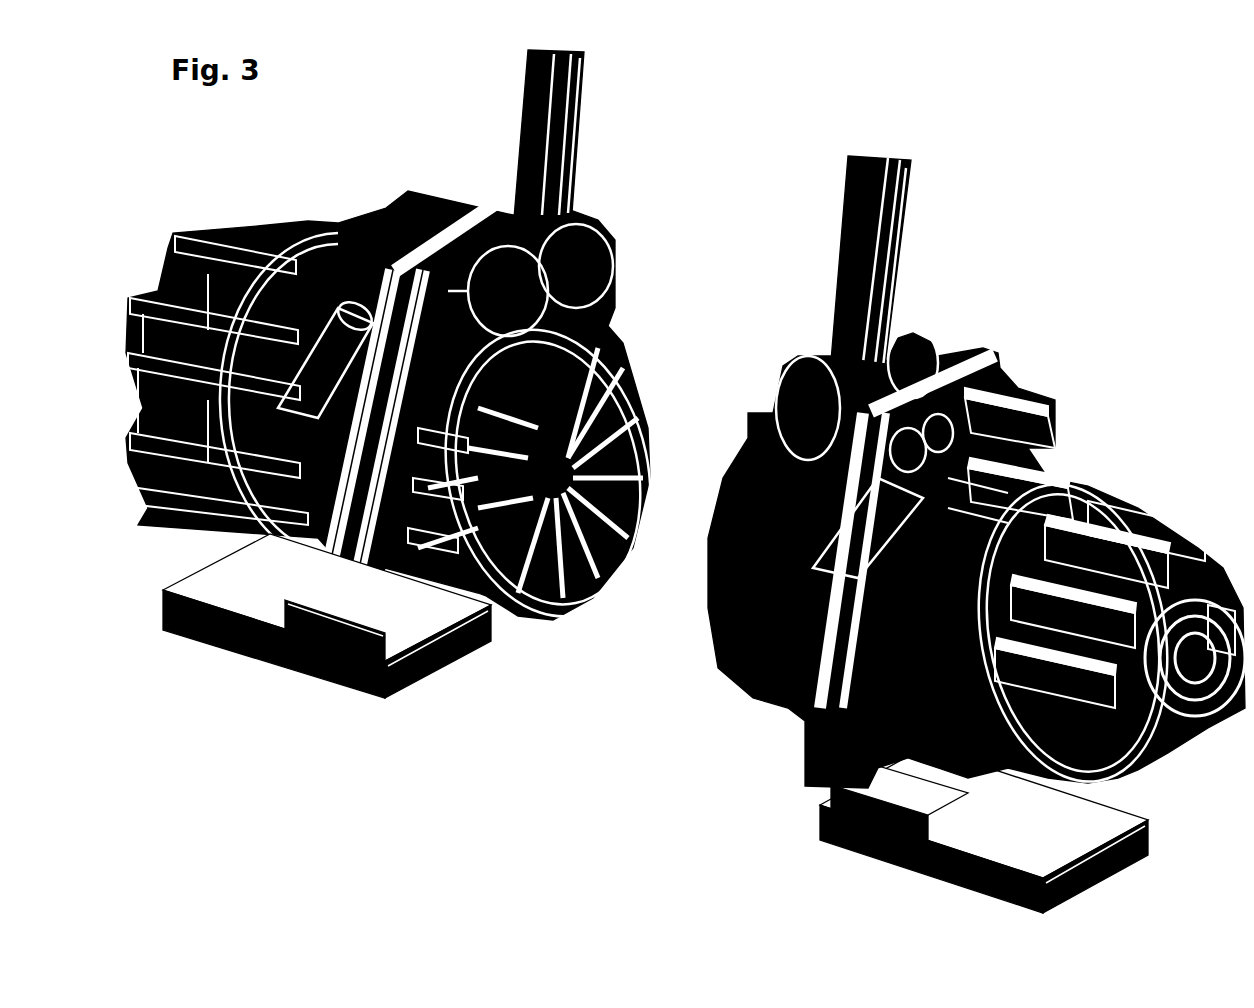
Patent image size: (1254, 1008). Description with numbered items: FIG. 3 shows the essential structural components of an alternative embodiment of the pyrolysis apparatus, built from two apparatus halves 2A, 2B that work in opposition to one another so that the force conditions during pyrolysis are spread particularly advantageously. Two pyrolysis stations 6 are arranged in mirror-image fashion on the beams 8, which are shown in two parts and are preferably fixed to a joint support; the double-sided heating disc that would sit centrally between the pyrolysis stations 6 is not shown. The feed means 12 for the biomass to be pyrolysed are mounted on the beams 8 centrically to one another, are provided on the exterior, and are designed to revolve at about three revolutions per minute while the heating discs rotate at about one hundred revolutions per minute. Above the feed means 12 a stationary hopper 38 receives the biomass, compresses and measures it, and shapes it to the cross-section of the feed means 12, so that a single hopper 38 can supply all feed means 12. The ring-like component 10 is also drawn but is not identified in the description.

The apparatus half 2A is at (312, 140).
The apparatus half 2B is at (1172, 199).
The pyrolysis station 6 is at (610, 340).
The beam 8 is at (288, 648).
The ring / housing 10 is at (1048, 480).
The feed means 12 is at (467, 595).
The hopper 38 is at (537, 78).